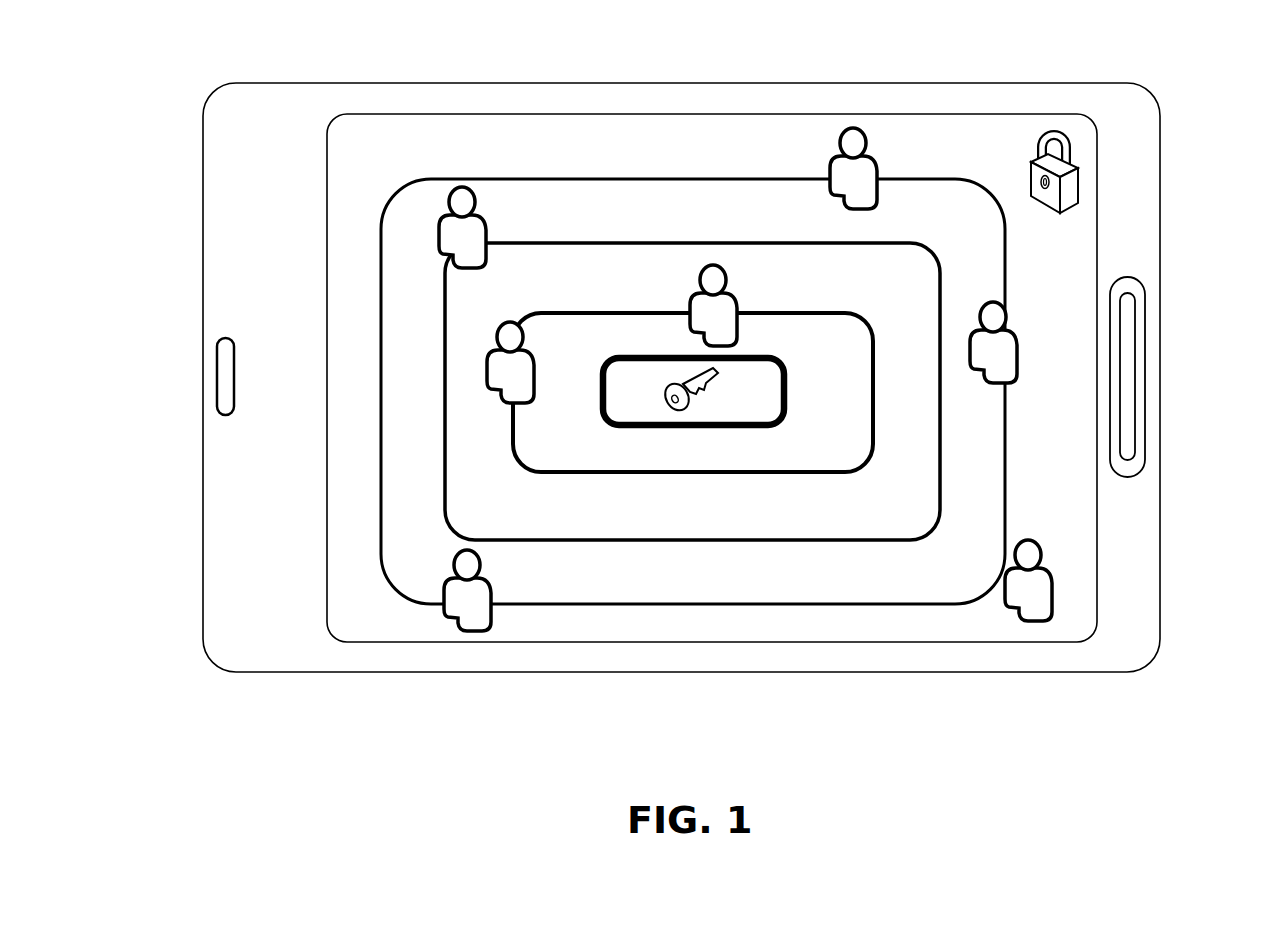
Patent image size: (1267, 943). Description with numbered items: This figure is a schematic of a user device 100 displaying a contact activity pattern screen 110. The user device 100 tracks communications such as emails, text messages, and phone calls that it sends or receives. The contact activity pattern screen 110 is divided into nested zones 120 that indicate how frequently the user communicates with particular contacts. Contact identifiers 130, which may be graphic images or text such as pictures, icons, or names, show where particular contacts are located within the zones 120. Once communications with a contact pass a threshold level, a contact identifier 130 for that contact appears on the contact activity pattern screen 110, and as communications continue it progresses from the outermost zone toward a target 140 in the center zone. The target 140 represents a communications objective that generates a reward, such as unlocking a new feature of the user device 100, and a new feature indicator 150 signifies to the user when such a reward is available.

The user device 100 is at (213, 53).
The contact activity pattern screen 110 is at (328, 176).
The zones 120 is at (407, 490).
The contact identifiers 130 is at (475, 185).
The target 140 is at (695, 398).
The new feature indicator 150 is at (1080, 177).